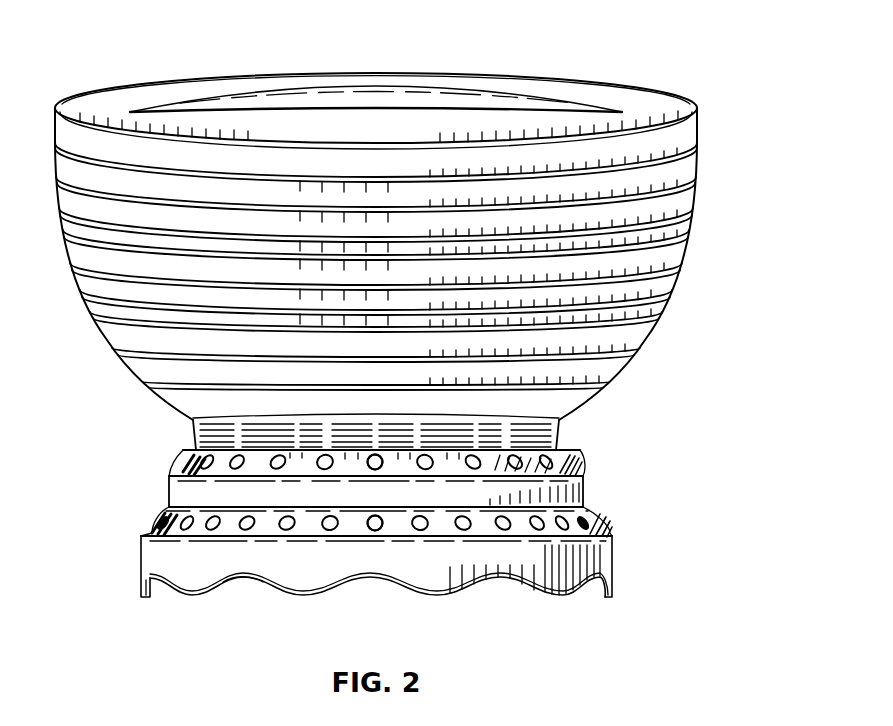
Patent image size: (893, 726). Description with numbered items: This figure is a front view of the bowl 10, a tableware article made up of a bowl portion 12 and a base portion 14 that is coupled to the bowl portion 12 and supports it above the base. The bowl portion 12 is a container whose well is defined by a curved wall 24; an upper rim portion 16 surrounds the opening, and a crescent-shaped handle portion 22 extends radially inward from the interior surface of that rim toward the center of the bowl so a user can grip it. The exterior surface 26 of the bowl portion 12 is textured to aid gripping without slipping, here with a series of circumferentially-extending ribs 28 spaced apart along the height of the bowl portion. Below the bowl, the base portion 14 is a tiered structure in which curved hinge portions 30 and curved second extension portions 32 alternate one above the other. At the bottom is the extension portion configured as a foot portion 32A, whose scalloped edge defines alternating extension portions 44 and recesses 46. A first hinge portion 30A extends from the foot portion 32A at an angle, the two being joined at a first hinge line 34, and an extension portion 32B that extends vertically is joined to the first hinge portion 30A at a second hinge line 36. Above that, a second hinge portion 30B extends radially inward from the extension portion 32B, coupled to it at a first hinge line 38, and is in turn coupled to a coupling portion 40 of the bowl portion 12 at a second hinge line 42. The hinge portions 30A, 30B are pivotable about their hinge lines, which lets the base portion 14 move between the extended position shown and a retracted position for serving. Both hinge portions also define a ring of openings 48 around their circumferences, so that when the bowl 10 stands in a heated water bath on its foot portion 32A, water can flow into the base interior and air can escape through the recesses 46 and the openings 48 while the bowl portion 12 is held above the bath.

The bowl 10 is at (597, 39).
The bowl portion 12 is at (686, 248).
The base portion 14 is at (627, 472).
The rim 16 is at (694, 110).
The handle portion 22 is at (456, 106).
The curved wall 24 is at (676, 283).
The exterior surface 26 is at (126, 330).
The ribs or ridges 28 is at (694, 190).
The hinge portions 30 is at (153, 525).
The first hinge portion 30A is at (376, 521).
The second hinge portion 30B is at (186, 461).
The second extension portions 32 is at (613, 578).
The foot portion 32A is at (376, 566).
The extension portion 32B is at (168, 497).
The first hinge line 34 is at (611, 538).
The second hinge line 36 is at (583, 507).
The first hinge line 38 is at (582, 472).
The coupling portion 40 is at (192, 430).
The second hinge line 42 is at (560, 447).
The extension portions 44 is at (186, 590).
The recesses 46 is at (244, 576).
The openings 48 is at (373, 472).